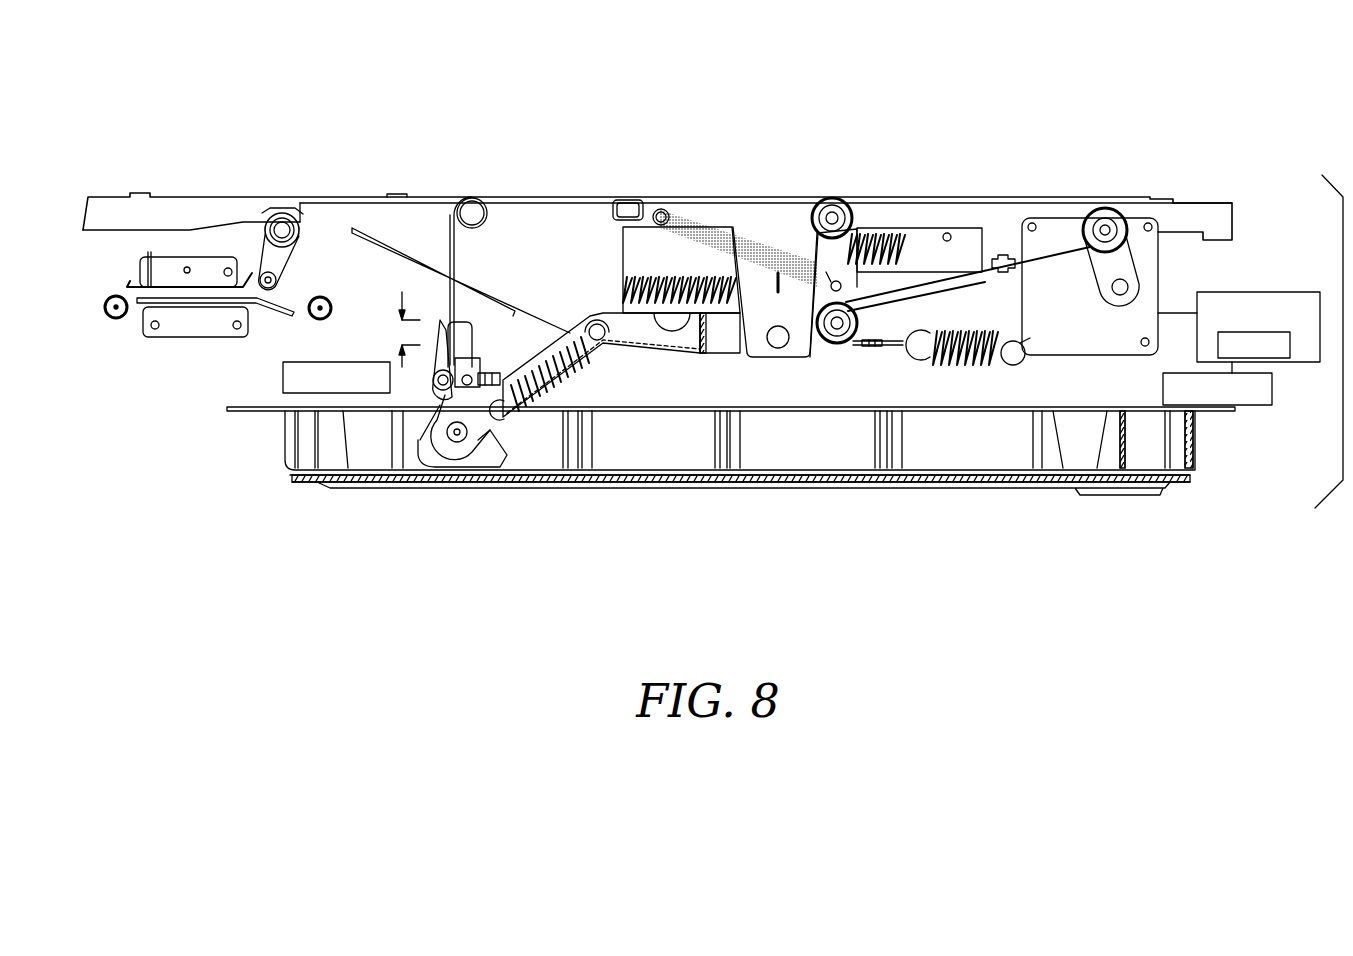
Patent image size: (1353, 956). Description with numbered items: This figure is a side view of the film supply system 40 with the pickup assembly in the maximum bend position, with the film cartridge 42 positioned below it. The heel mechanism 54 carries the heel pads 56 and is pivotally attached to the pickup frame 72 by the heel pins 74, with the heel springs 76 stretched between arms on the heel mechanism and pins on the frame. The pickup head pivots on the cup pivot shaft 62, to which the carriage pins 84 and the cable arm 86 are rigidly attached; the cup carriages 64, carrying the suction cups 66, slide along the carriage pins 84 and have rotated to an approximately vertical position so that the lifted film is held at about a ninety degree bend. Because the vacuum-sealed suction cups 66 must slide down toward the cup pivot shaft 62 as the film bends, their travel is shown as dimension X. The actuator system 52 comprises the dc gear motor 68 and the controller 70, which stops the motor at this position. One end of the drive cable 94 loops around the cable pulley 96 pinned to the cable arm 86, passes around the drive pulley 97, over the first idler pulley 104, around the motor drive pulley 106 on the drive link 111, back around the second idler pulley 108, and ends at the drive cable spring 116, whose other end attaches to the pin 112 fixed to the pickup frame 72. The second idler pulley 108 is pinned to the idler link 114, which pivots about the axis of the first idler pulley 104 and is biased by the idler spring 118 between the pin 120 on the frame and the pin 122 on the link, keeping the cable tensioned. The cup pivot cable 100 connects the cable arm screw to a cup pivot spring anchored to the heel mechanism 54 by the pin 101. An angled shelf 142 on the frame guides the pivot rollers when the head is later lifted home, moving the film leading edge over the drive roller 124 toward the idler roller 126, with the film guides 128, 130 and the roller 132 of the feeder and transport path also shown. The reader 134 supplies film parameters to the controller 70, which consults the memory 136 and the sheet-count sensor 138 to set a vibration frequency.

The film supply system 40 is at (988, 146).
The film cartridge 42 is at (642, 446).
The actuator system 52 is at (1277, 420).
The heel mechanism 54 is at (630, 327).
The heel pads 56 is at (500, 462).
The cup pivot shaft 62 is at (457, 445).
The cup carriages 64 is at (470, 360).
The suction cups 66 is at (425, 367).
The dc gear motor 68 is at (1070, 340).
The controller 70 is at (1267, 292).
The pickup frame 72 is at (786, 347).
The heel pins 74 is at (755, 353).
The heel springs 76 is at (668, 285).
The carriage pins 84 is at (473, 320).
The cable arm 86 is at (443, 407).
The drive cable 94 is at (513, 198).
The cable pulley 96 is at (425, 400).
The drive pulley 97 is at (463, 200).
The cup pivot cable 100 is at (500, 423).
The pin 101 is at (592, 322).
The first idler pulley 104 is at (840, 200).
The motor drive pulley 106 is at (1127, 212).
The second idler pulley 108 is at (837, 343).
The drive link 111 is at (1127, 268).
The pin 112 is at (1035, 343).
The idler link 114 is at (825, 253).
The drive cable spring 116 is at (925, 340).
The idler spring 118 is at (757, 233).
The pin 120 is at (665, 210).
The pin 122 is at (845, 283).
The drive roller 124 is at (320, 297).
The idler roller 126 is at (265, 213).
The film guide 128 is at (175, 268).
The film guide 130 is at (170, 337).
The roller 132 is at (106, 300).
The reader 134 is at (1163, 390).
The memory 136 is at (1277, 358).
The sensor 138 is at (283, 378).
The angled shelf 142 is at (355, 224).
The dimension x X is at (397, 328).